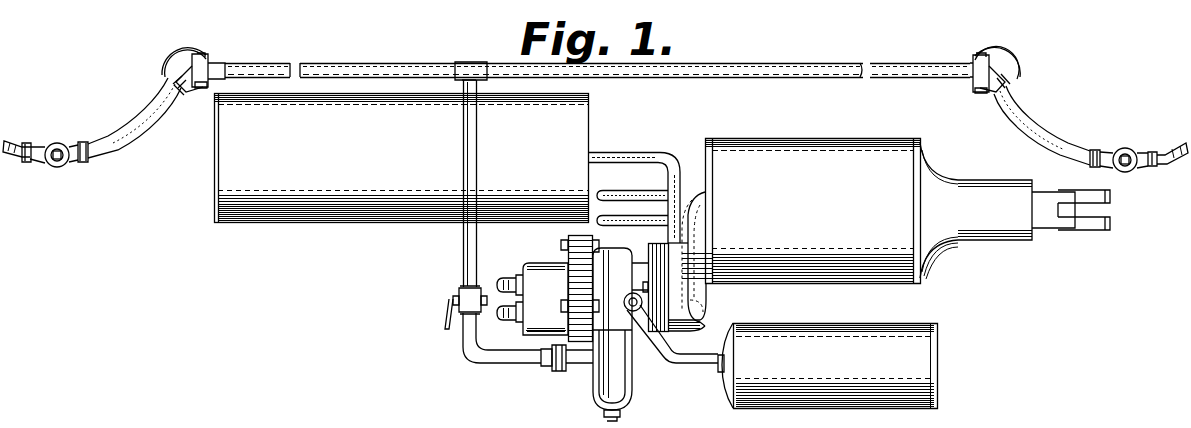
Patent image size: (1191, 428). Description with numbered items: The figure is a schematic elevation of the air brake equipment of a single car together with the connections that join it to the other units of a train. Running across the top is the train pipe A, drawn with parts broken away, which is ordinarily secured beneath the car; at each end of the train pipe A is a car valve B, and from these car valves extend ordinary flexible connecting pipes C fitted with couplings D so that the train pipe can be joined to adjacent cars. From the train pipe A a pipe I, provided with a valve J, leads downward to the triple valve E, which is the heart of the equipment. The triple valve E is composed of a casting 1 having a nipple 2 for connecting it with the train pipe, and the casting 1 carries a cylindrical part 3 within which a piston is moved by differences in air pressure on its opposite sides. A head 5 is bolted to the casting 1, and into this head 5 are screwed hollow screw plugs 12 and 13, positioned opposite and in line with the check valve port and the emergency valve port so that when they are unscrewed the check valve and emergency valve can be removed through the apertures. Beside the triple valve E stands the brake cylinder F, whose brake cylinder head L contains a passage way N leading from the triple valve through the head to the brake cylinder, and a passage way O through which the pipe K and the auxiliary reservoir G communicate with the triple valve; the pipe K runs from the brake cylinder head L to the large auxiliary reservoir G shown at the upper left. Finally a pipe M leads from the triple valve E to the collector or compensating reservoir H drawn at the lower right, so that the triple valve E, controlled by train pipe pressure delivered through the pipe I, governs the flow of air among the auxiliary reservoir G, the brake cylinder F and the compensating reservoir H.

The train pipe A is at (711, 74).
The car valves B is at (201, 53).
The flexible connecting pipes C is at (18, 141).
The couplings D is at (35, 165).
The triple valve E is at (564, 272).
The brake cylinder F is at (830, 139).
The auxiliary reservoir G is at (324, 210).
The collector or compensating reservoir H is at (836, 398).
The pipe I is at (463, 242).
The valve J is at (448, 301).
The pipe K is at (633, 162).
The brake cylinder head L is at (712, 295).
The pipe M is at (692, 365).
The passage way N is at (700, 303).
The passage way O is at (668, 264).
The casting 1 is at (626, 379).
The nipple 2 is at (583, 366).
The cylindrical part 3 is at (606, 253).
The head 5 is at (530, 334).
The hollow screw plug 12 is at (507, 321).
The hollow screw plug 13 is at (510, 280).